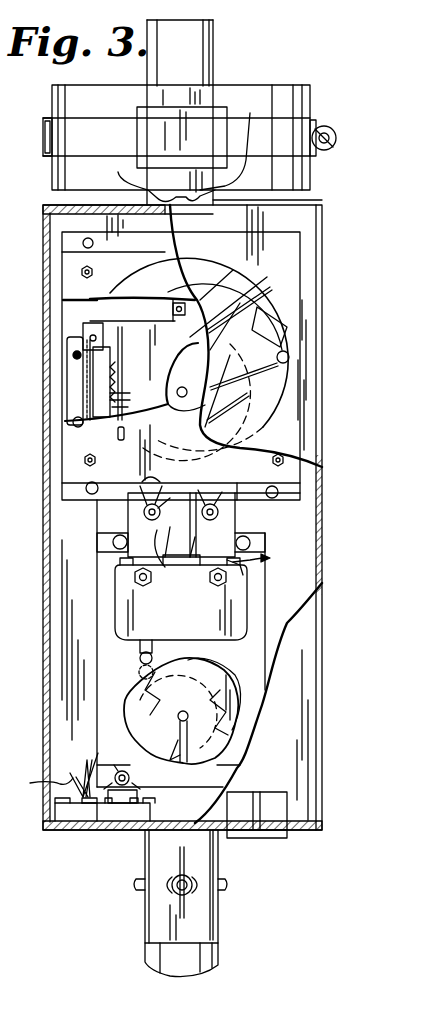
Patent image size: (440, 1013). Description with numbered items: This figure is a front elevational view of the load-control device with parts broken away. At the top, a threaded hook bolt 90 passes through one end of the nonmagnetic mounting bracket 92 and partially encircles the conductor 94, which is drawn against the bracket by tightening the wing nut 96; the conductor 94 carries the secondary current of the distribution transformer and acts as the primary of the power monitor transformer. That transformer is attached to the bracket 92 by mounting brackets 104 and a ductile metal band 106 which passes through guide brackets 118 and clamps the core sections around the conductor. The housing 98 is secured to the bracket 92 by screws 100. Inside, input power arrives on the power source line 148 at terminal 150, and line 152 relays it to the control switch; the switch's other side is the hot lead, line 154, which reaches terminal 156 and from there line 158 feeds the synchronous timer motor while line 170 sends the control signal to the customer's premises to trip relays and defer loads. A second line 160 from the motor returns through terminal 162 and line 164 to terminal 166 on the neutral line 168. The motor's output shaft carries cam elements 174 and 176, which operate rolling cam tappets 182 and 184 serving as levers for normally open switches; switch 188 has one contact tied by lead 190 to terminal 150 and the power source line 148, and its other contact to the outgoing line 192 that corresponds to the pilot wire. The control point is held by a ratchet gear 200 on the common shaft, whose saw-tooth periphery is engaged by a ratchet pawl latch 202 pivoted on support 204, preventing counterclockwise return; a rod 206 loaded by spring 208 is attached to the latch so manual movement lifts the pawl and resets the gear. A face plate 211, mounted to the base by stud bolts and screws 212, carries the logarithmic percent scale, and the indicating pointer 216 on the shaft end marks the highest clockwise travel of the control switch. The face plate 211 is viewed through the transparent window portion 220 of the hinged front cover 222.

The threaded hook bolt 90 is at (134, 885).
The mounting bracket 92 is at (152, 918).
The conductor 94 is at (152, 957).
The wing nut 96 is at (186, 912).
The housing 98 is at (290, 832).
The screws 100 is at (93, 244).
The mounting brackets 104 is at (180, 115).
The metal band 106 is at (75, 147).
The guide brackets 118 is at (30, 143).
The power source line 148 is at (37, 787).
The terminal 150 is at (88, 832).
The line 152 is at (76, 771).
The line 154 is at (134, 498).
The terminal 156 is at (157, 522).
The line 158 is at (157, 497).
The second line 160 is at (245, 500).
The terminal 162 is at (227, 522).
The line 164 is at (203, 500).
The terminal 166 is at (110, 832).
The neutral line 168 is at (134, 792).
The line 170 is at (176, 538).
The cam element 174 is at (212, 668).
The cam element 176 is at (168, 664).
The cam tappet 182 is at (140, 673).
The cam tappet 184 is at (140, 656).
The switch 188 is at (181, 597).
The lead 190 is at (170, 571).
The outgoing line 192 is at (270, 558).
The ratchet gear 200 is at (150, 400).
The ratchet pawl latch 202 is at (98, 305).
The support 204 is at (87, 368).
The rod 206 is at (144, 322).
The spring 208 is at (112, 425).
The face plate 211 is at (168, 275).
The stud bolts and screws 212 is at (92, 268).
The indicating pointer 216 is at (188, 390).
The transparent window portion 220 is at (258, 292).
The hinged front cover 222 is at (306, 218).